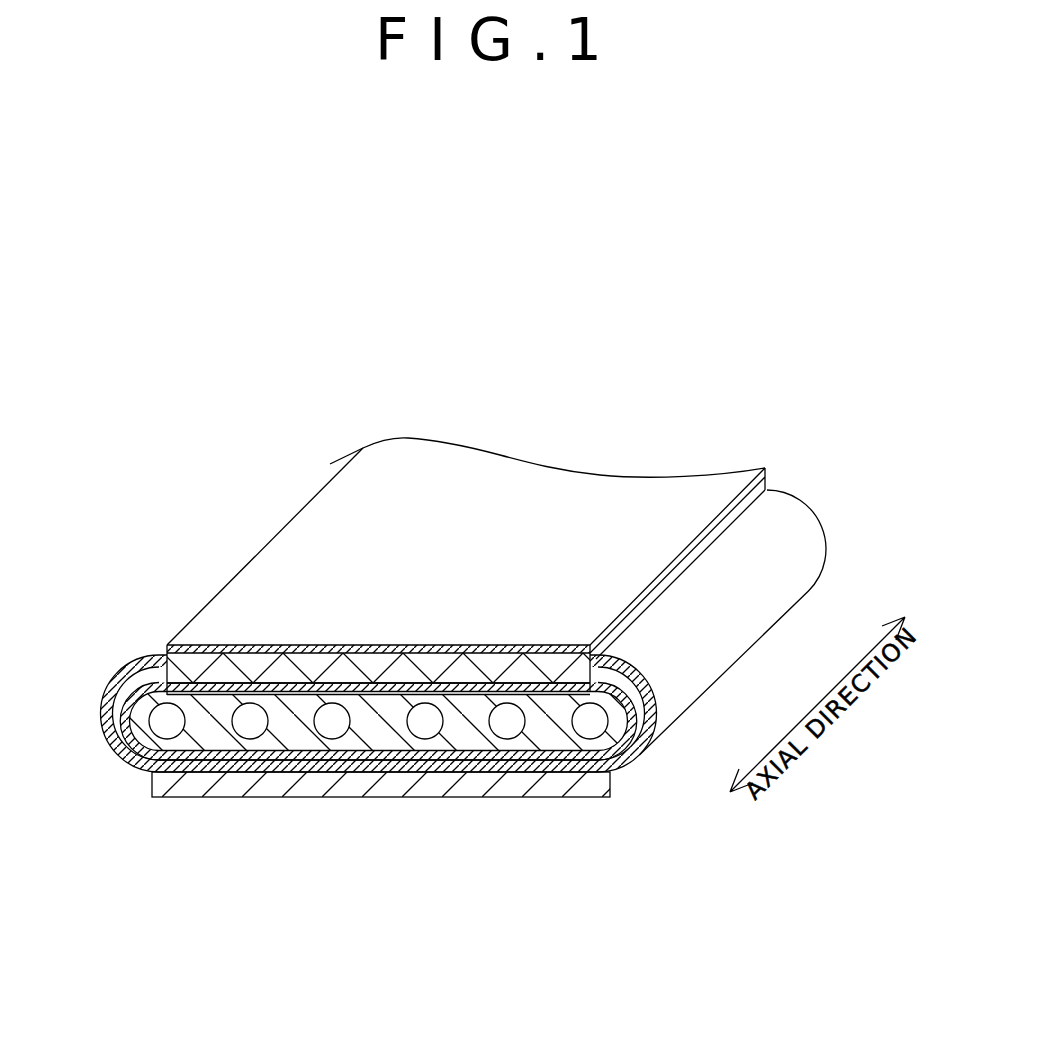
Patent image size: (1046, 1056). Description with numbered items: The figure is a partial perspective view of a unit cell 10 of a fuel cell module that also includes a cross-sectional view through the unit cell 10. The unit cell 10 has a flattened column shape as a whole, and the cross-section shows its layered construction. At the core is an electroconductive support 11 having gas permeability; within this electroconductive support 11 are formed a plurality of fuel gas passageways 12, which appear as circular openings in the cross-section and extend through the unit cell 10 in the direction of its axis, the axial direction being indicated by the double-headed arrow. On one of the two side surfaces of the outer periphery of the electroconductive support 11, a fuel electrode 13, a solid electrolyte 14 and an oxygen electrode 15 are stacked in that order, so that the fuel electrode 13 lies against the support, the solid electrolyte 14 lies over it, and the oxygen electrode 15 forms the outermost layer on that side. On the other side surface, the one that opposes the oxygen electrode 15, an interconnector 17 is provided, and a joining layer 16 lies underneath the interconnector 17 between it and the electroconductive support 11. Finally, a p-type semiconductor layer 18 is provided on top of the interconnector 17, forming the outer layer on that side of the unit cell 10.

The unit cell 10 is at (757, 385).
The electroconductive support 11 is at (377, 727).
The fuel gas passageways 12 is at (425, 727).
The fuel electrode 13 is at (535, 757).
The solid electrolyte 14 is at (613, 768).
The oxygen electrode 15 is at (263, 790).
The joining layer 16 is at (152, 661).
The interconnector 17 is at (193, 686).
The p-type semiconductor layer 18 is at (230, 607).